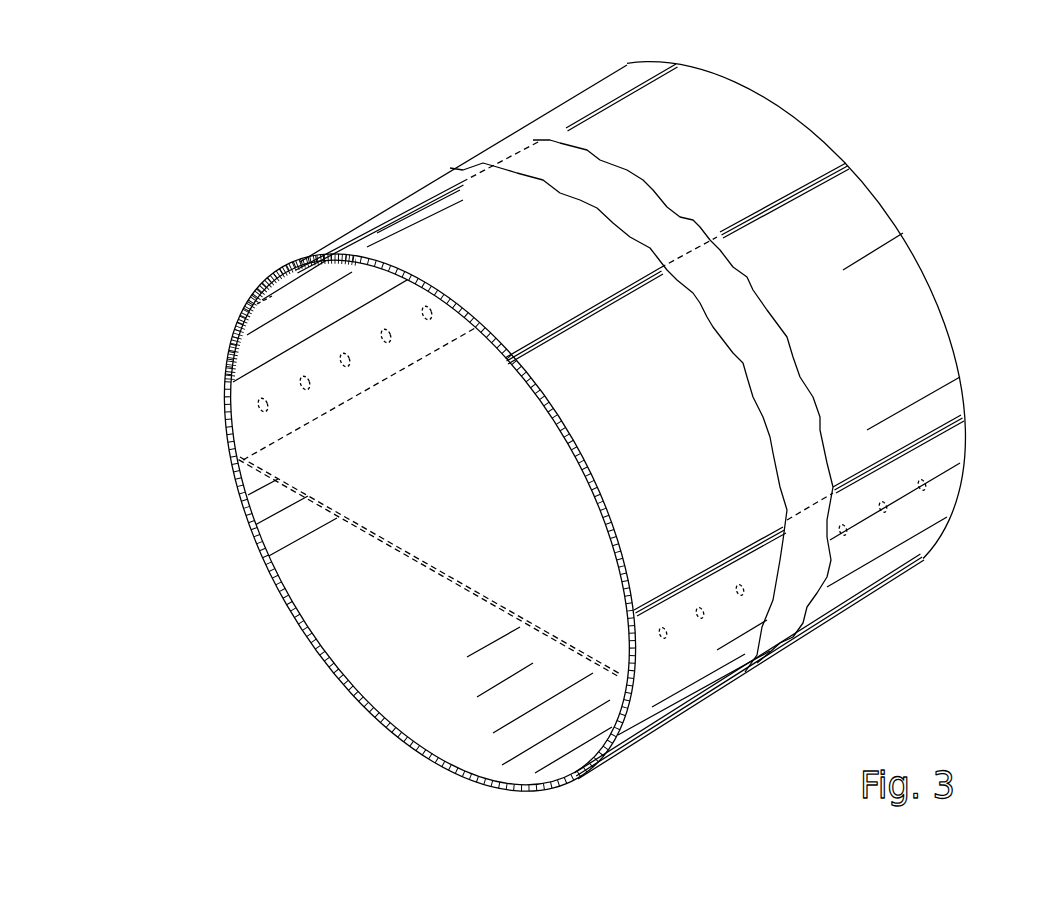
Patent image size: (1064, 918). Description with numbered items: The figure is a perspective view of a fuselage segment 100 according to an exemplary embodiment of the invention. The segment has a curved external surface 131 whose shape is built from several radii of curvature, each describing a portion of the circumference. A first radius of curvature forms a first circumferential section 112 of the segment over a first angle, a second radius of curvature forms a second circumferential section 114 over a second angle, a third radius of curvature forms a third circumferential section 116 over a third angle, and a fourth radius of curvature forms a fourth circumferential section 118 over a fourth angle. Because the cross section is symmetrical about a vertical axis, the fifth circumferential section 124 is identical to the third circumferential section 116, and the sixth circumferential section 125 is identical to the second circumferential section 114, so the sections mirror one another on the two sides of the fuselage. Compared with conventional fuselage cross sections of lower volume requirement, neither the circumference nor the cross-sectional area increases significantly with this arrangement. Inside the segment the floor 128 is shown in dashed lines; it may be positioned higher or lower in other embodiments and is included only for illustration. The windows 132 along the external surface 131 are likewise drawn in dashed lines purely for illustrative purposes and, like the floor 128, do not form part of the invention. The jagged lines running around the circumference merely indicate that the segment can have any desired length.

The inlet assembly 100 is at (330, 176).
The first circumferential section 112 is at (472, 306).
The second circumferential section 114 is at (620, 508).
The third circumferential section 116 is at (655, 688).
The fourth circumferential section 118 is at (385, 737).
The fifth circumferential section 124 is at (240, 478).
The sixth circumferential section 125 is at (252, 292).
The floor 128 is at (455, 568).
The curved external surface 131 is at (640, 757).
The windows 132 is at (310, 388).